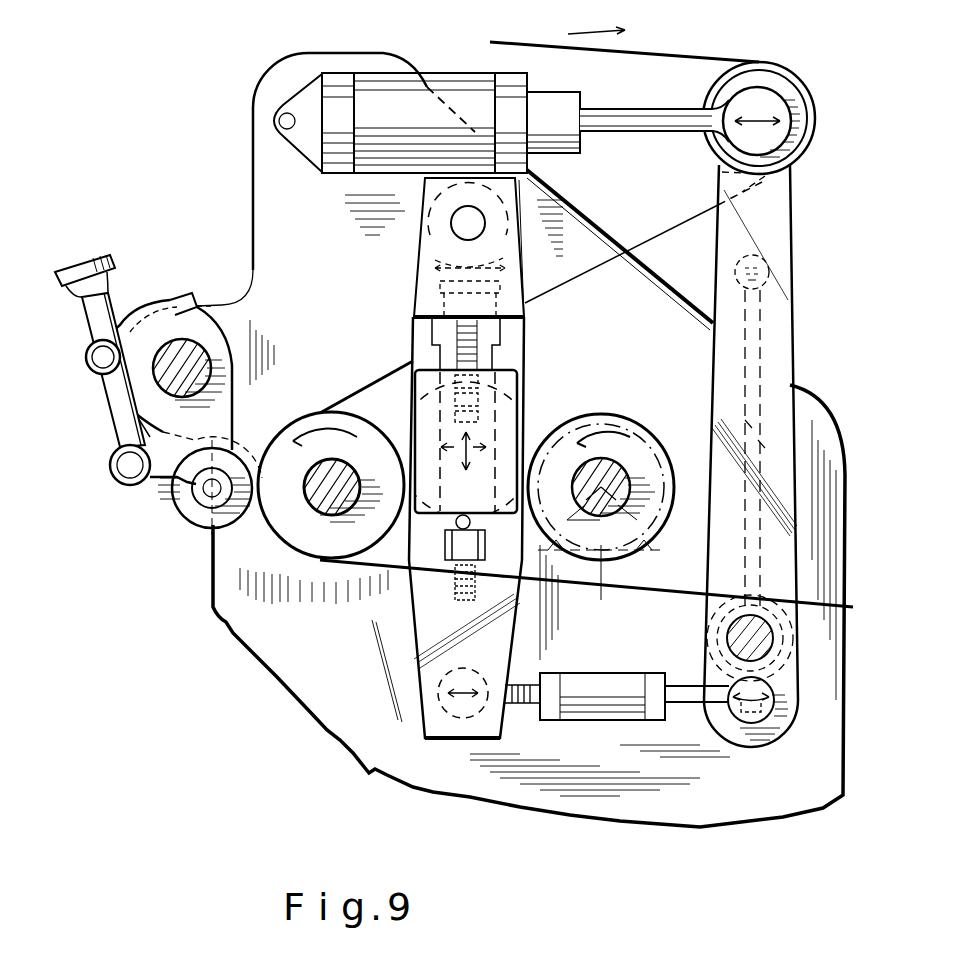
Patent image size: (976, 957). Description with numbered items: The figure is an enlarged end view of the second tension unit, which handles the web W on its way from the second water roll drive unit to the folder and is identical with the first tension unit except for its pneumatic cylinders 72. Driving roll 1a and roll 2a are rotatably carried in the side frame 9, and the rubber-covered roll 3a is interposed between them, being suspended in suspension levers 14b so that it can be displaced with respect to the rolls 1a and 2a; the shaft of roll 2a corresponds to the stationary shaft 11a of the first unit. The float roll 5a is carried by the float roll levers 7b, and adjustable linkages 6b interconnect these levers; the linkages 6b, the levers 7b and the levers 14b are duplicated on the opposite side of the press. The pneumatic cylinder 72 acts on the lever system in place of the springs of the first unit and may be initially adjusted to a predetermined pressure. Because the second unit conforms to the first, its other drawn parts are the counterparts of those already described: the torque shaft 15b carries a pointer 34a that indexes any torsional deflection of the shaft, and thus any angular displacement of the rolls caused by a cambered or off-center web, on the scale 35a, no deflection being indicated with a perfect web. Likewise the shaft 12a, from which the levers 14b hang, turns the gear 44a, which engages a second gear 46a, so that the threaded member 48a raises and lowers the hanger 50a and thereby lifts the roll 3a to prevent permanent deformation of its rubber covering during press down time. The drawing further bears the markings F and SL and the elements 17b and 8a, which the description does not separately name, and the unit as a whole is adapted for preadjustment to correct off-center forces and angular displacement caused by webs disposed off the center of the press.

The side frame 9 is at (710, 798).
The pneumatic cylinder 72 is at (470, 68).
The float roll 5a is at (768, 63).
The web W is at (708, 54).
The float roll lever 7b is at (785, 239).
The pin 35a is at (770, 272).
The slot 34a is at (750, 392).
The pivot pin 15b is at (720, 636).
The adjustable linkage 6b is at (603, 672).
The pivot 12a is at (458, 223).
The arrow / adjustment 44a is at (432, 270).
The bracket 46a is at (430, 302).
The suspension lever 14b is at (526, 294).
The spindle 48a is at (447, 347).
The rubber-covered roll 3a is at (404, 432).
The valve side 50a is at (536, 440).
The force direction F is at (454, 448).
The stroke direction SL is at (484, 438).
The fitting 17b is at (430, 537).
The roll 2a is at (346, 412).
The roller shaft 11a is at (308, 491).
The roll 1a is at (620, 412).
The roller 8a is at (184, 508).